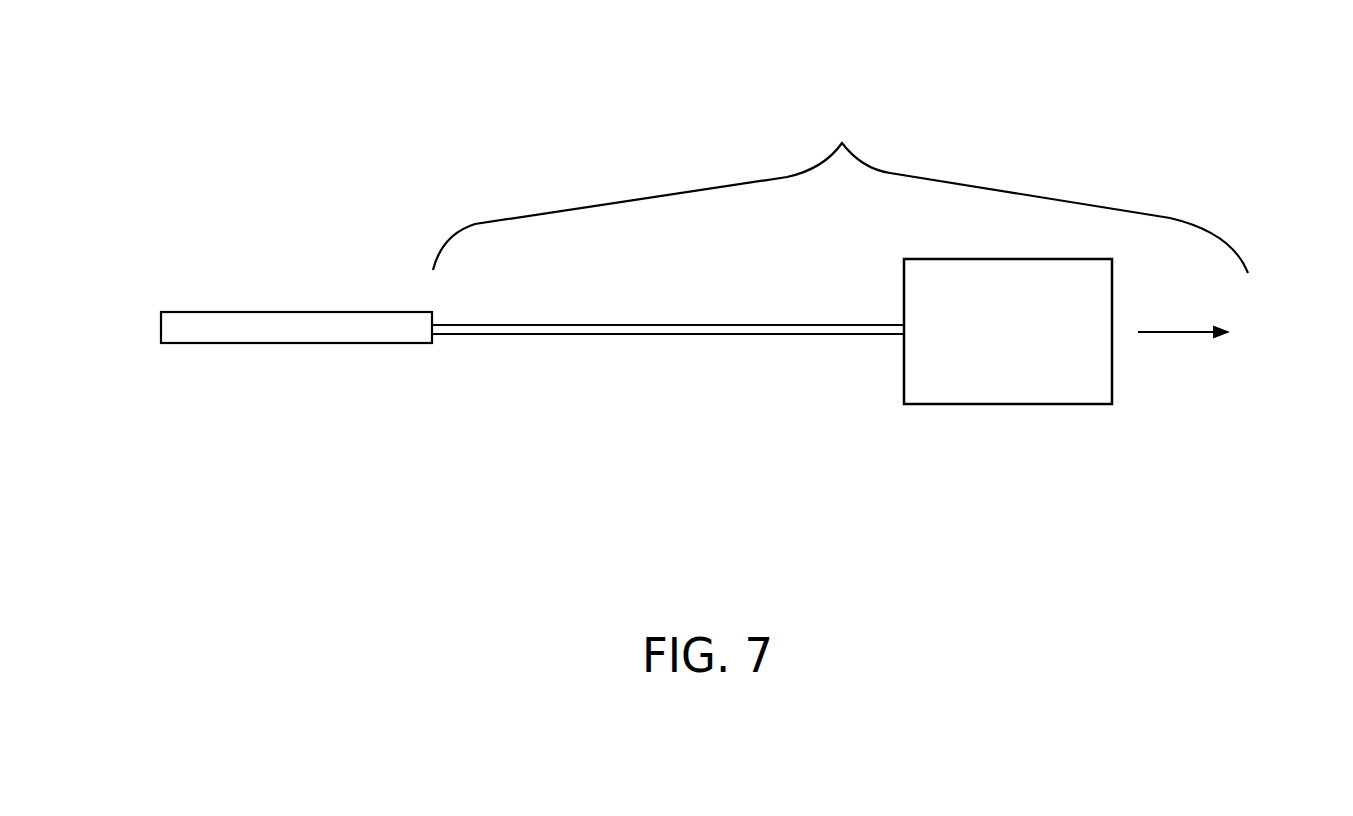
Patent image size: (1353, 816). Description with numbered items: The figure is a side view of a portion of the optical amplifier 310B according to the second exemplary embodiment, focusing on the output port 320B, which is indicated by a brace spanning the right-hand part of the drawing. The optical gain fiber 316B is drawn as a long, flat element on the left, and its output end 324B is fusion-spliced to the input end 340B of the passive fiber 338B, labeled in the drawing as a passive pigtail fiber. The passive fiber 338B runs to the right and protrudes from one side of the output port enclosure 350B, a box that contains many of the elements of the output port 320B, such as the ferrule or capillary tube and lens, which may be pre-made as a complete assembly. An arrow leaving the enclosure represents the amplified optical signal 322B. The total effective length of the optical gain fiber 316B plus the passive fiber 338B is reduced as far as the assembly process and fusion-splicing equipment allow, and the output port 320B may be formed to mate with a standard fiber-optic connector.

The optical amplifier 310B is at (1140, 67).
The optical gain fiber 316B is at (253, 343).
The output port 320B is at (840, 192).
The amplified optical signal 322B is at (1194, 334).
The output end of the optical gain fiber 324B is at (397, 312).
The passive fiber 338B is at (687, 335).
The input end of the passive fiber 340B is at (452, 346).
The output port enclosure 350B is at (958, 404).